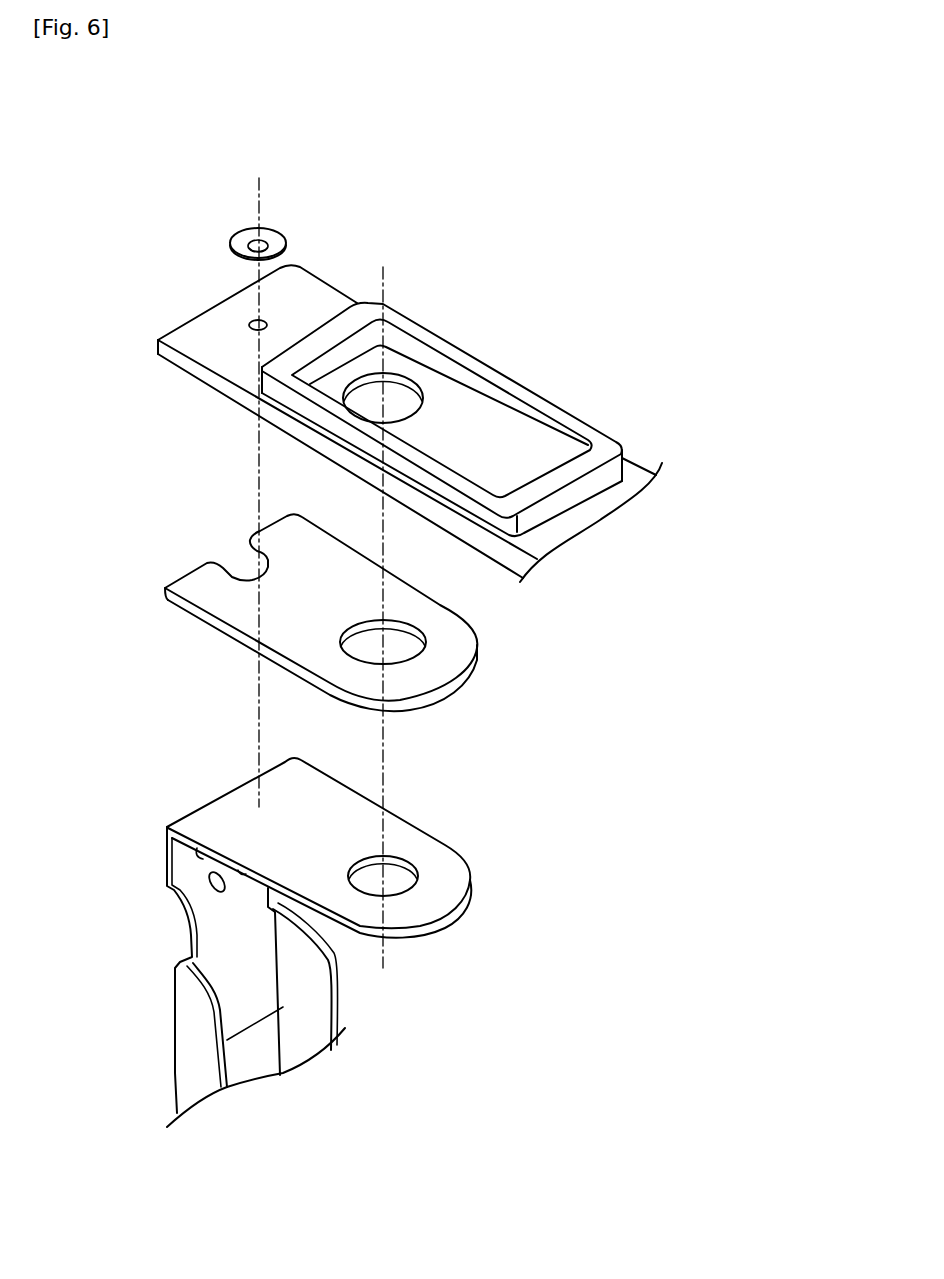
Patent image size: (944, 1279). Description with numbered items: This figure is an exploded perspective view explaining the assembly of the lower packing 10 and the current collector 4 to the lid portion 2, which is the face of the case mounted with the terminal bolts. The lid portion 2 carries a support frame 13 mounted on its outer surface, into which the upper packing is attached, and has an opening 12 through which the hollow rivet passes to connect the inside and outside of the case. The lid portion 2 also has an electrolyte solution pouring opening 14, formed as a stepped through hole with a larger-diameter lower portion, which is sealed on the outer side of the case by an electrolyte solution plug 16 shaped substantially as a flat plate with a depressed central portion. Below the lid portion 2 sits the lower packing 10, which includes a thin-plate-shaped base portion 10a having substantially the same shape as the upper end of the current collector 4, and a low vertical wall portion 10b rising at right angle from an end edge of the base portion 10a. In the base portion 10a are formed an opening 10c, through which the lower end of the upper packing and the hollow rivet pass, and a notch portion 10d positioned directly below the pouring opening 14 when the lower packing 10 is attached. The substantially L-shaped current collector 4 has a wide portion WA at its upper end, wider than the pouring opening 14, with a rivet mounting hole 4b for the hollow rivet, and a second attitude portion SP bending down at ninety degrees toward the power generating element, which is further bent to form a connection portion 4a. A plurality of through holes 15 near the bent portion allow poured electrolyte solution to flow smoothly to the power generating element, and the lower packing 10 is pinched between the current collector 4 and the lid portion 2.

The lid portion 2 is at (174, 323).
The current collector 4 is at (328, 942).
The connection portion 4a is at (333, 1020).
The rivet mounting hole 4b is at (371, 877).
The lower packing 10 is at (548, 679).
The base portion 10a is at (267, 637).
The vertical wall portion 10b is at (420, 712).
The opening 10c is at (374, 636).
The notch portion 10d is at (240, 562).
The opening 12 is at (398, 405).
The support frame 13 is at (546, 397).
The electrolyte solution pouring opening 14 is at (251, 329).
The through holes 15 is at (203, 853).
The electrolyte solution plug 16 is at (282, 236).
The wide portion WA is at (320, 808).
The second attitude portion SP is at (210, 944).